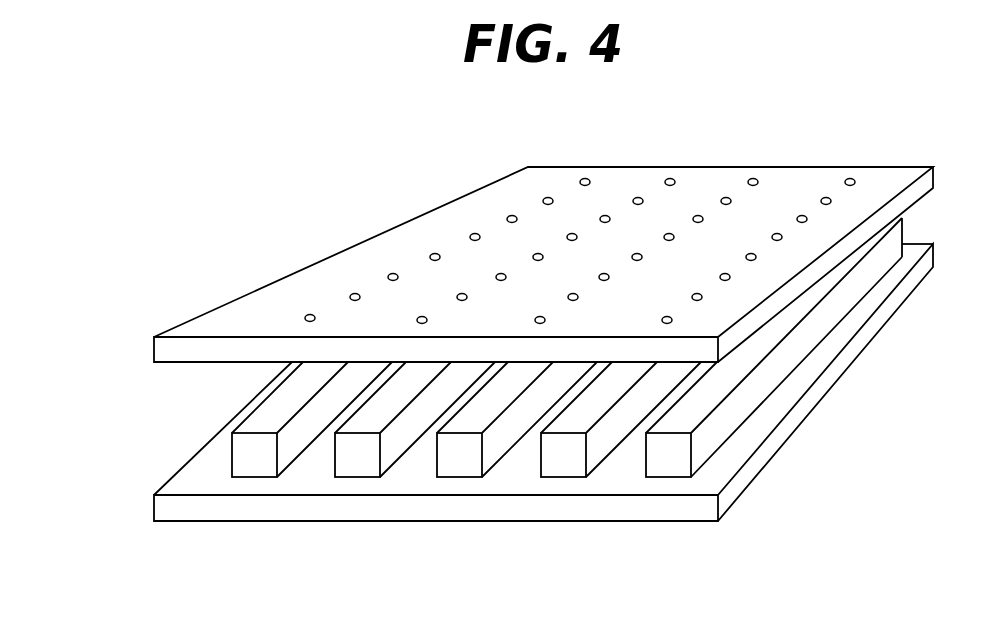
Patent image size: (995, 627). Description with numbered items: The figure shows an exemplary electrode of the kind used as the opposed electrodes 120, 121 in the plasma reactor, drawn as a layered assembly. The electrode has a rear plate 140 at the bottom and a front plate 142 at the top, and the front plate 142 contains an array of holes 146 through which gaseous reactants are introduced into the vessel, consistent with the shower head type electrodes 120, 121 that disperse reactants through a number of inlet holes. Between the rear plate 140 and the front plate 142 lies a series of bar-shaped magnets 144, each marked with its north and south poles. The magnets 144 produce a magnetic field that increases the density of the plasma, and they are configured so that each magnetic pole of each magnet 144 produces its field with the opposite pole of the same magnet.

The electrode 120 is at (148, 335).
The electrode 121 is at (543, 330).
The rear plate 140 is at (823, 383).
The front plate 142 is at (543, 230).
The magnets 144 is at (262, 424).
The holes 146 is at (310, 311).